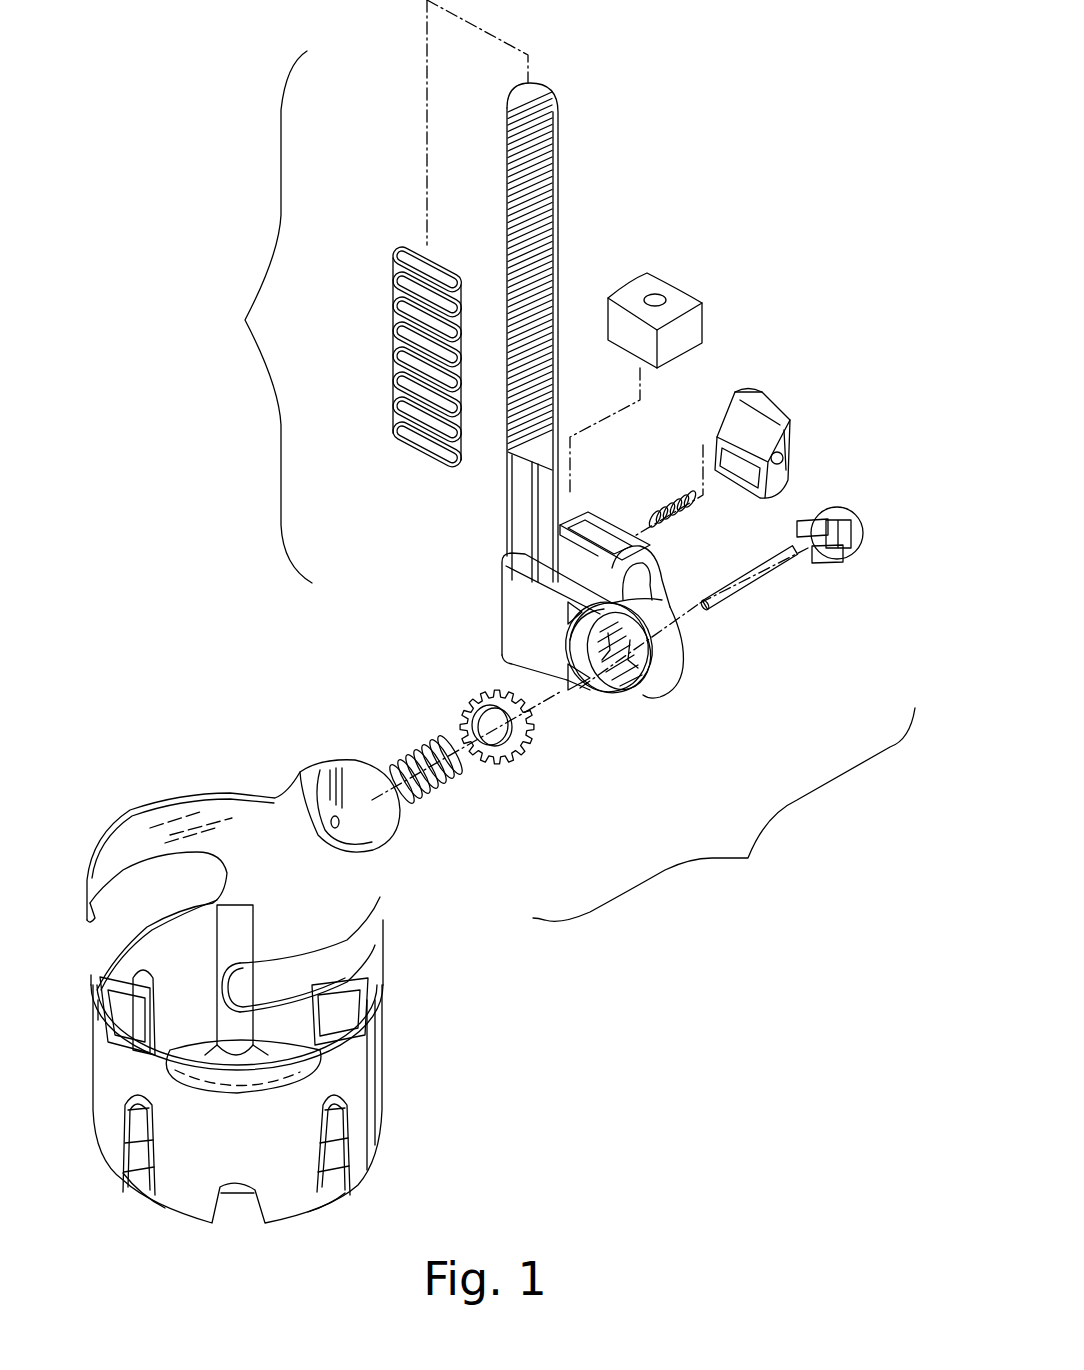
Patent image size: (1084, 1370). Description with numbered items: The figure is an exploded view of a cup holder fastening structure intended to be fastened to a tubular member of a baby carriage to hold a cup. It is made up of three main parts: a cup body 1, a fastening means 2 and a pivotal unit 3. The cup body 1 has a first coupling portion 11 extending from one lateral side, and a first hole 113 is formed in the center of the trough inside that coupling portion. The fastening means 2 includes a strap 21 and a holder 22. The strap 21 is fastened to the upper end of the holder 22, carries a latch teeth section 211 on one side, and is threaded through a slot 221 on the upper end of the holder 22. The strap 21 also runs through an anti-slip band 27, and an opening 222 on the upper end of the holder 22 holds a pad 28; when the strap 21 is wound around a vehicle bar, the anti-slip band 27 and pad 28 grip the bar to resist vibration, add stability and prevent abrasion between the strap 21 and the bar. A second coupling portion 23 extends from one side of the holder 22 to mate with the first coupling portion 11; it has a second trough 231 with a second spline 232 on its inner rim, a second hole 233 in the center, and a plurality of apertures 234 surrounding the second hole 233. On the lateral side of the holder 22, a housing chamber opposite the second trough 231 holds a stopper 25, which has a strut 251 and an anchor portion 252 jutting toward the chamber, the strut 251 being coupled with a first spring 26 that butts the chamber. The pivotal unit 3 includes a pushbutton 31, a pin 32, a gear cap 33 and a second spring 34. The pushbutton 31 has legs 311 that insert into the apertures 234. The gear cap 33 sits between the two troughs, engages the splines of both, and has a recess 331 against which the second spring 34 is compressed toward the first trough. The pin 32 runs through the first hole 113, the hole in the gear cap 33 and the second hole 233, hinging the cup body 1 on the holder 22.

The cup body 1 is at (368, 1038).
The first coupling portion 11 is at (330, 828).
The first hole 113 is at (332, 818).
The fastening means 2 is at (264, 317).
The strap 21 is at (585, 332).
The latch teeth section 211 is at (540, 185).
The holder 22 is at (581, 568).
The slot 221 is at (592, 558).
The opening 222 is at (640, 540).
The second coupling portion 23 is at (651, 705).
The second trough 231 is at (637, 703).
The second spline 232 is at (607, 707).
The second hole 233 is at (643, 647).
The apertures 234 is at (573, 690).
The stopper 25 is at (805, 397).
The strut 251 is at (740, 395).
The anchor portion 252 is at (790, 432).
The first spring 26 is at (668, 497).
The anti-slip band 27 is at (385, 357).
The pad 28 is at (657, 287).
The pivotal unit 3 is at (724, 814).
The pushbutton 31 is at (855, 590).
The legs 311 is at (813, 565).
The pin 32 is at (752, 578).
The gear cap 33 is at (477, 767).
The recess 331 is at (490, 747).
The second spring 34 is at (438, 792).